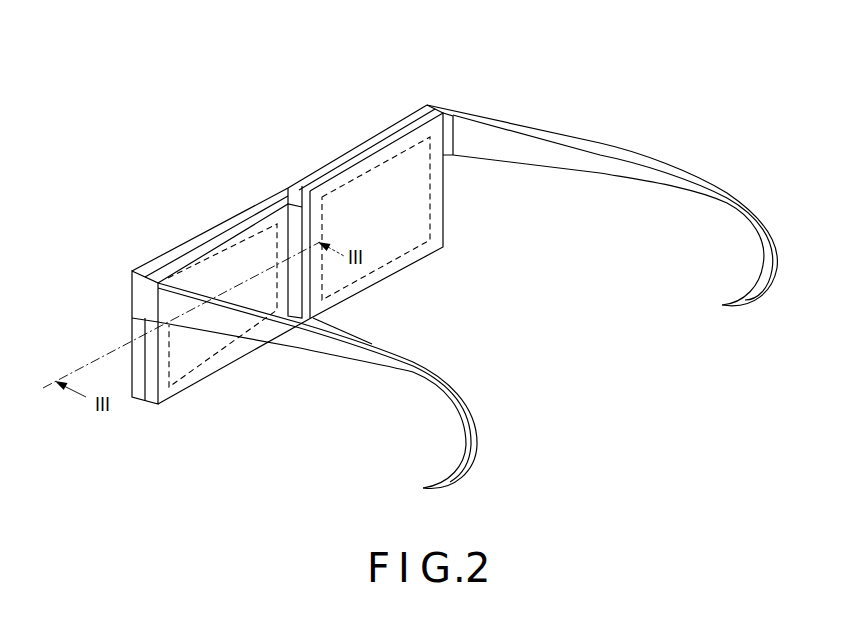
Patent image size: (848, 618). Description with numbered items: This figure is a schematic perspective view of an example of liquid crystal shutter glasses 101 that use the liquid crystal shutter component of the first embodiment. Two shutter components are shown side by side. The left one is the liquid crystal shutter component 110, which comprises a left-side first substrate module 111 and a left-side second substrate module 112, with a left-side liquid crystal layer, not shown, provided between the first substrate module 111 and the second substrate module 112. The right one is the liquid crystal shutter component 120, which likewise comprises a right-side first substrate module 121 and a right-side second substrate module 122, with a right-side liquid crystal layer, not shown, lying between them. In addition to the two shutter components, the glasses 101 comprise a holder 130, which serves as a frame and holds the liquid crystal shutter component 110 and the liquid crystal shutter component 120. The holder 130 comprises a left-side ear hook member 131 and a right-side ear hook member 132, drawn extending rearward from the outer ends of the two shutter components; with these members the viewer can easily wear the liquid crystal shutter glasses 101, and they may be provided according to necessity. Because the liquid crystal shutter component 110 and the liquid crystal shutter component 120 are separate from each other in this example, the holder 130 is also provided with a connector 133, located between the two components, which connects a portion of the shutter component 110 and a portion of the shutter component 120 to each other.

The liquid crystal shutter glasses 101 is at (658, 70).
The liquid crystal shutter component 110 is at (189, 256).
The first substrate module 111 is at (215, 240).
The second substrate module 112 is at (178, 245).
The liquid crystal shutter component 120 is at (339, 168).
The first substrate module 121 is at (380, 147).
The second substrate module 122 is at (343, 150).
The holder 130 is at (467, 296).
The left-side ear hook member 131 is at (336, 340).
The right-side ear hook member 132 is at (602, 205).
The connector 133 is at (313, 207).